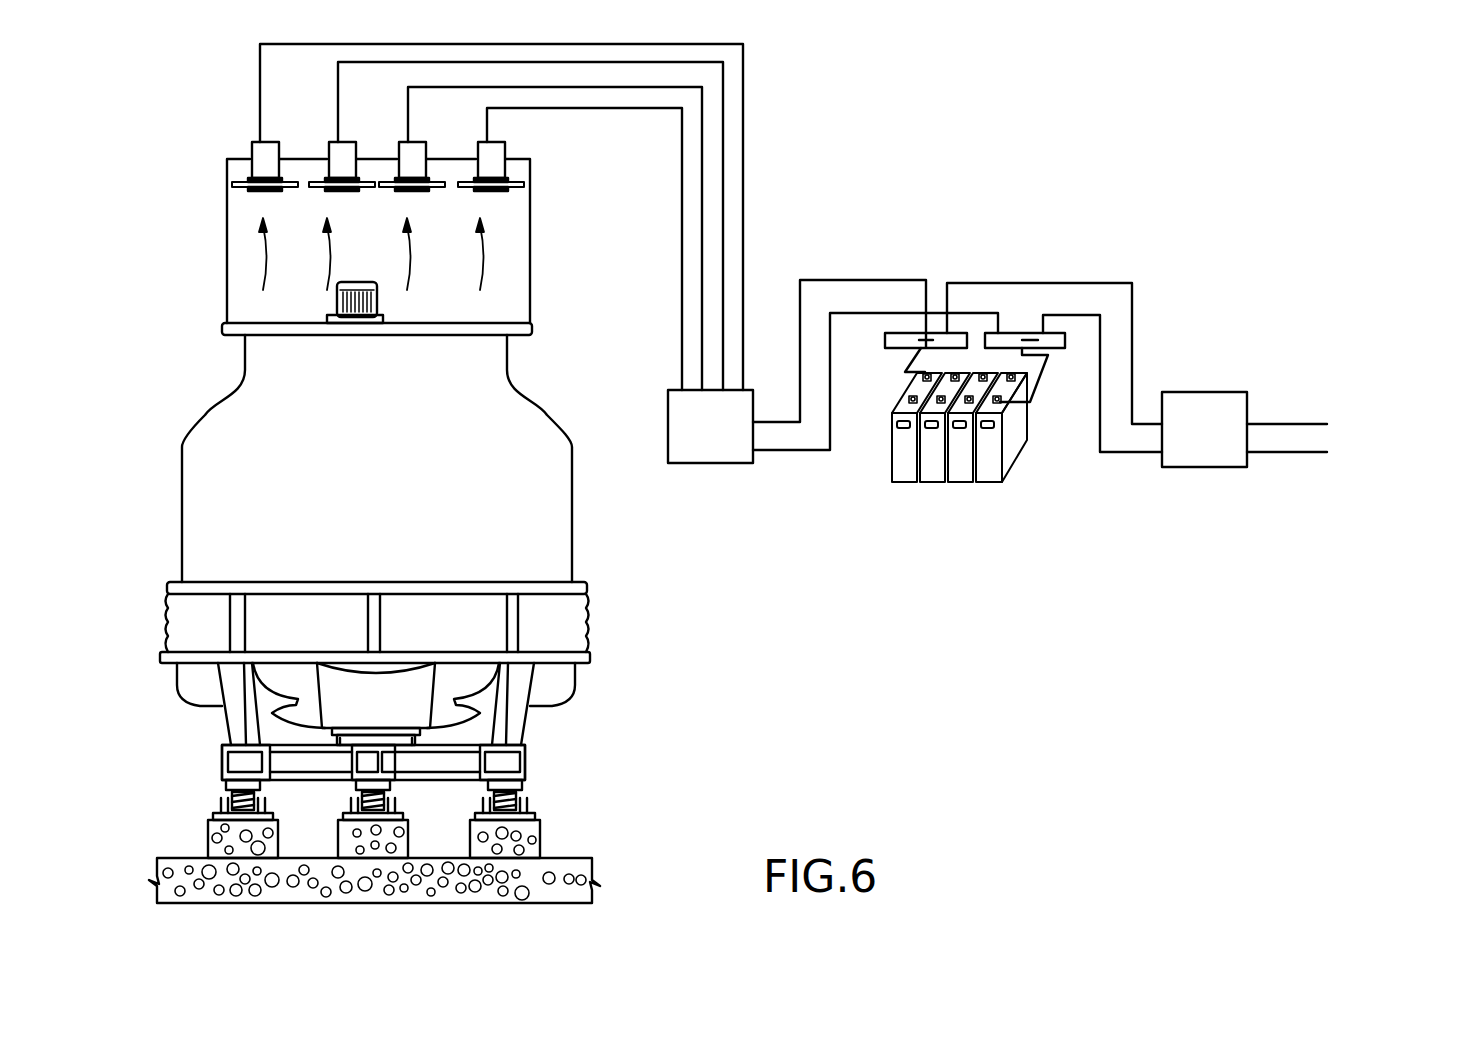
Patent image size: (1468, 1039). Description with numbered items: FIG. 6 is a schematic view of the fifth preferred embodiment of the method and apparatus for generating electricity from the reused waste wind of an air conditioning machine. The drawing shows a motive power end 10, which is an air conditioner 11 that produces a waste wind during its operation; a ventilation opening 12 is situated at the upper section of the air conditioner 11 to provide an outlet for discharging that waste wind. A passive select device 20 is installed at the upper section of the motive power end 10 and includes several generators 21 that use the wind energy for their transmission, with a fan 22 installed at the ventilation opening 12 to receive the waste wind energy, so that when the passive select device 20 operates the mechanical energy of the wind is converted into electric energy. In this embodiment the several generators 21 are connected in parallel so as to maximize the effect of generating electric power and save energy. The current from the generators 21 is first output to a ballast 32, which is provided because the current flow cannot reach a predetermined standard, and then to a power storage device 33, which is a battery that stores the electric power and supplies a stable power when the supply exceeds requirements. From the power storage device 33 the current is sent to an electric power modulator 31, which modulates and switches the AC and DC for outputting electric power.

The motive power end 10 is at (200, 418).
The air conditioner 11 is at (240, 487).
The ventilation opening 12 is at (258, 323).
The passive select device 20 is at (243, 149).
The generator 21 is at (275, 145).
The fan 22 is at (505, 186).
The electric power modulator 31 is at (1210, 450).
The ballast 32 is at (717, 423).
The power storage device 33 is at (960, 463).